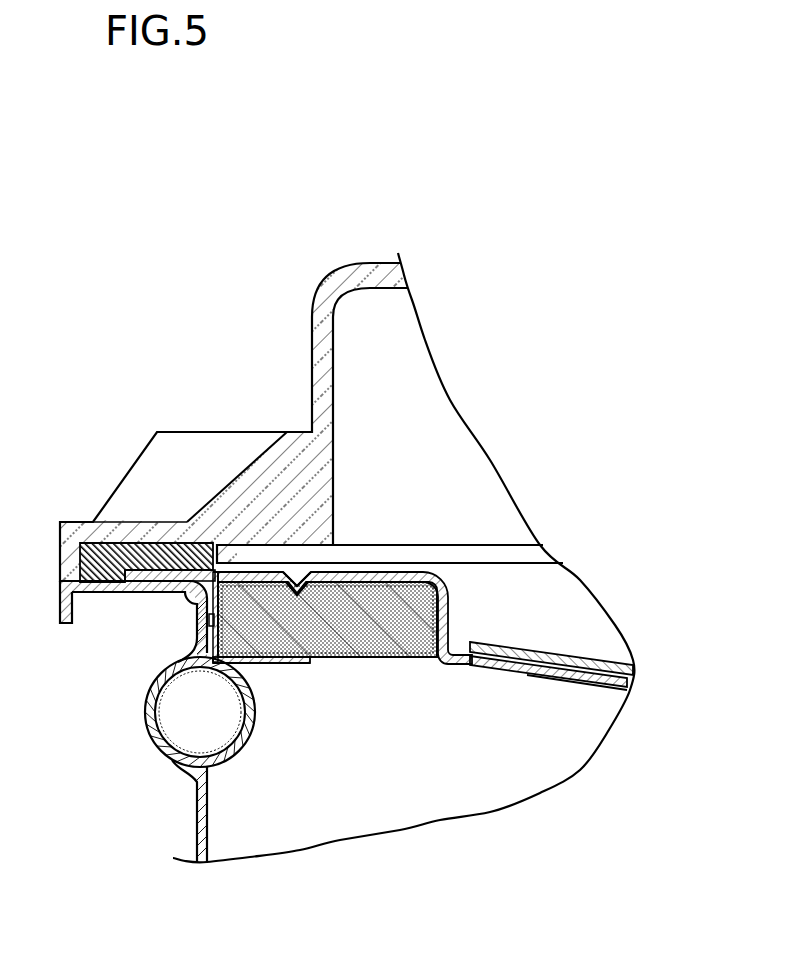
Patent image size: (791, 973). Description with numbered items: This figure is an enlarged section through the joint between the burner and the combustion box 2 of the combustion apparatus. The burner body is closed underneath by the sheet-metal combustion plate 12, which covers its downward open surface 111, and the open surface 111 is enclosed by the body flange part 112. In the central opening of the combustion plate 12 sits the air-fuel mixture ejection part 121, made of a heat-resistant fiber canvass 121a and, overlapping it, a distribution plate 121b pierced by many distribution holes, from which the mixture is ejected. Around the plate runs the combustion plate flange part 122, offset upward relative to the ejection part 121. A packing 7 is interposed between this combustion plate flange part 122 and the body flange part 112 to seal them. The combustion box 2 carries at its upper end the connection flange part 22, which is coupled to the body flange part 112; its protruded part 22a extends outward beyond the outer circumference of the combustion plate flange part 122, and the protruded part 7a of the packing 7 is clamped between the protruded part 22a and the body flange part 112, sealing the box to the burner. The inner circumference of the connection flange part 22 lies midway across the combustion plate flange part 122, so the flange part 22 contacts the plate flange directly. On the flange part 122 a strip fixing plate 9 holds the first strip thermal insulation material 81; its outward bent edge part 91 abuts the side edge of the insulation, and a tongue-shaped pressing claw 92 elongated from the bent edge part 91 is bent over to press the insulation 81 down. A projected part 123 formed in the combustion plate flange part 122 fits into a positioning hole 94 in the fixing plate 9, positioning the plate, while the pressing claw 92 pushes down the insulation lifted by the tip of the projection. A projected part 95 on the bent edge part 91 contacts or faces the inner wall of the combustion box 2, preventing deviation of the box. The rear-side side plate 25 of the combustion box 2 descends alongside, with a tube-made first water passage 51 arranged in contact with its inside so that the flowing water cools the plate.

The combustion box 2 is at (190, 814).
The rear-side side plate 25 is at (197, 790).
The first water passage 51 is at (232, 753).
The packing 7 is at (164, 543).
The protruded part of packing 7a is at (107, 546).
The connection flange part 22 is at (157, 592).
The protruded part of connection flange part 22a is at (103, 592).
The fixing plate 9 is at (367, 584).
The first strip thermal insulation material 81 is at (400, 654).
The bent edge part 91 is at (228, 618).
The pressing claw 92 is at (282, 663).
The positioning hole 94 is at (311, 588).
The projected part for positioning 95 is at (209, 620).
The open surface 111 is at (382, 566).
The body flange part 112 is at (130, 520).
The combustion plate 12 is at (450, 667).
The air-fuel mixture ejection part 121 is at (607, 726).
The canvass 121a is at (503, 672).
The distribution plate 121b is at (570, 674).
The combustion plate flange part 122 is at (257, 573).
The projected part 123 is at (301, 594).